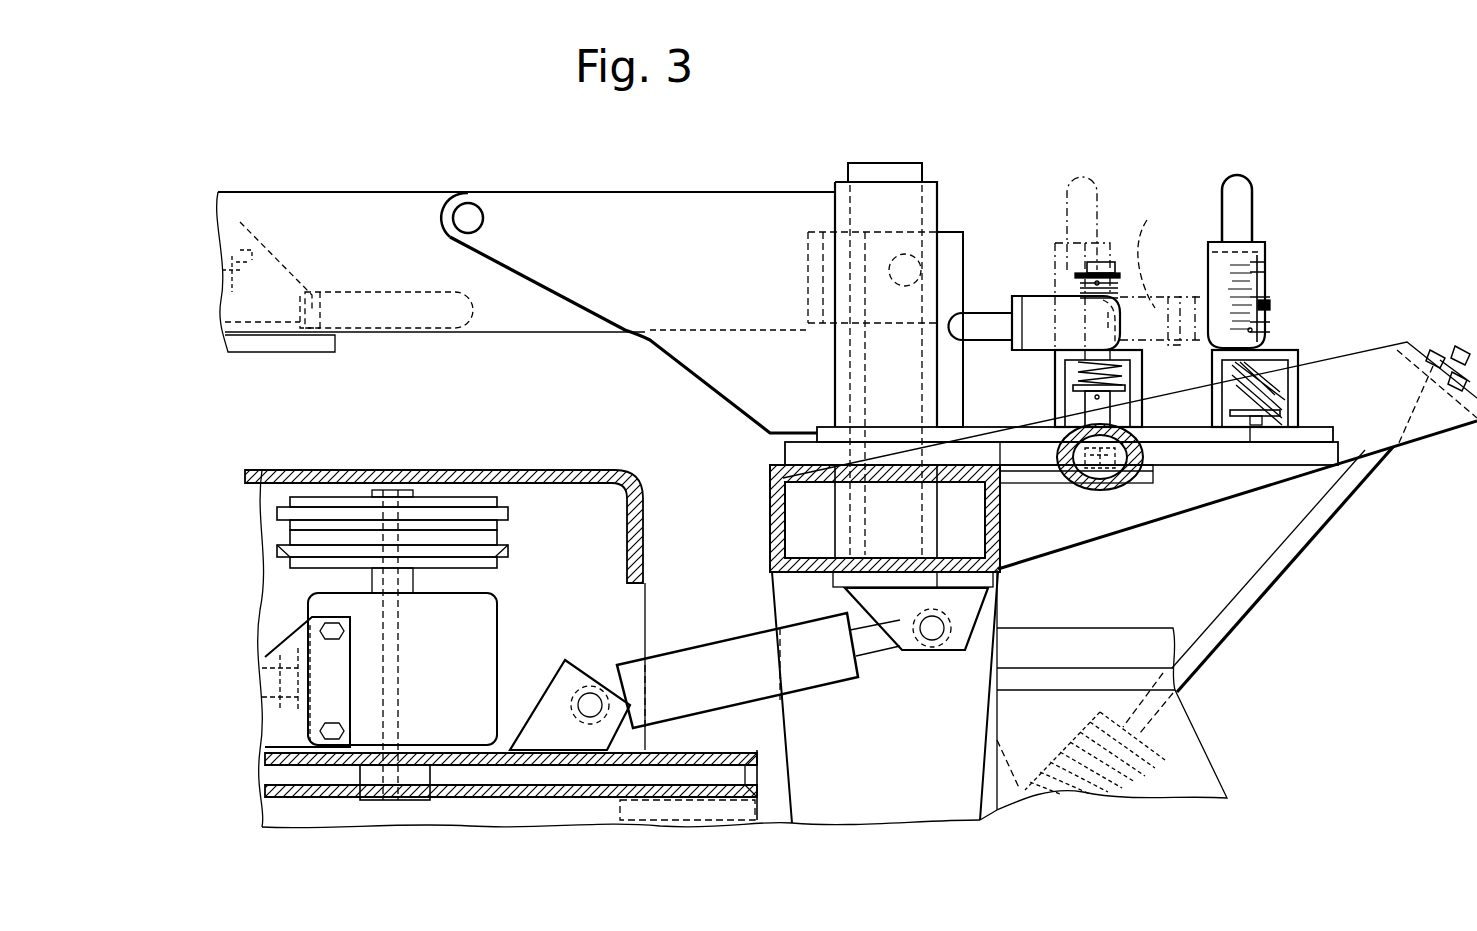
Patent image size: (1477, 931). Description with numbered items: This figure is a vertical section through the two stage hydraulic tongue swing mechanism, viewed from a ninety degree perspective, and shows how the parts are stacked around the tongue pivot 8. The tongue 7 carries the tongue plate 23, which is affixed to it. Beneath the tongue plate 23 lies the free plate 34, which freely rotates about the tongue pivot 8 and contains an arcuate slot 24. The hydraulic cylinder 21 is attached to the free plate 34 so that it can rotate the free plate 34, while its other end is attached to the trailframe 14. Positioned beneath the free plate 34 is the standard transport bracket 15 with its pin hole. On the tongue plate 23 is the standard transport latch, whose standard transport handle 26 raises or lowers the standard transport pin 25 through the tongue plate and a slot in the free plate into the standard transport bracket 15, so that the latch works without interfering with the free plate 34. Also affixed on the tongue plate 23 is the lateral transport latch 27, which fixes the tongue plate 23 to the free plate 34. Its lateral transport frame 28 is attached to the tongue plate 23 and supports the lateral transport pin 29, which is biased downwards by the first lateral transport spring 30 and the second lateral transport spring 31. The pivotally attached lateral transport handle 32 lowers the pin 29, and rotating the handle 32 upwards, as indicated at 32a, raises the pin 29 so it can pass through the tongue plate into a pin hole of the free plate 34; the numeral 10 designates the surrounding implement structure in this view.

The tongue 7 is at (530, 192).
The tongue pivot 8 is at (880, 170).
The machine frame 10 is at (243, 797).
The trailframe 14 is at (1000, 518).
The standard transport bracket 15 is at (1150, 475).
The hydraulic cylinder 21 is at (1073, 490).
The tongue plate 23 is at (1333, 427).
The arcuate slot 24 is at (1041, 270).
The standard transport pin 25 is at (1113, 268).
The standard transport handle 26 is at (985, 313).
The lateral transport latch 27 is at (1241, 150).
The lateral transport frame 28 is at (1297, 368).
The lateral transport pin 29 is at (1283, 355).
The first lateral transport spring 30 is at (1275, 390).
The second lateral transport spring 31 is at (1273, 312).
The lateral transport handle 32 is at (1243, 200).
The switch connection 32a is at (1174, 252).
The free plate 34 is at (1273, 453).